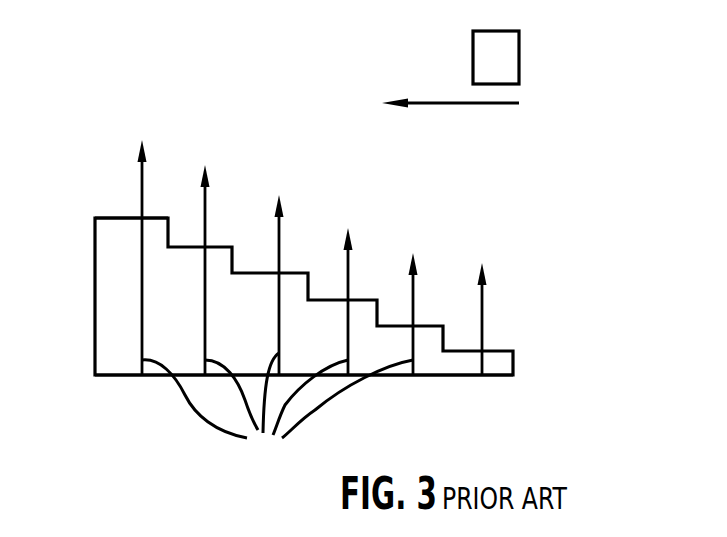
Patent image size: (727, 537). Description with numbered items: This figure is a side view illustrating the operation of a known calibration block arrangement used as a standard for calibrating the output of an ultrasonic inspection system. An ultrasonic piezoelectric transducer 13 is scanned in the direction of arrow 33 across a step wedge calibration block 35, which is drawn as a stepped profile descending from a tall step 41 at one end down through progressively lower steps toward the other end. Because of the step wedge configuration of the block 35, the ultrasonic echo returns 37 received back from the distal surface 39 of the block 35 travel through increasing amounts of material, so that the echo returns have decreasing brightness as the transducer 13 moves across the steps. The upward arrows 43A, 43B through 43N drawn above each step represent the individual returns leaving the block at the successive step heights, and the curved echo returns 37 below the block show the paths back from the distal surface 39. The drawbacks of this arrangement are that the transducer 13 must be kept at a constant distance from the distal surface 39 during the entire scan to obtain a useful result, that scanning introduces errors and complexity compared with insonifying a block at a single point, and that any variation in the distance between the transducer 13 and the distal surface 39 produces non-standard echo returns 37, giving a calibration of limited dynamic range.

The ultrasonic piezoelectric transducer 13 is at (510, 56).
The arrow 33 is at (493, 104).
The step wedge calibration block 35 is at (515, 358).
The ultrasonic echo returns 37 is at (277, 412).
The distal surface 39 is at (108, 375).
The top step 41 is at (115, 218).
The first beam 43A is at (503, 336).
The second beam 43B is at (430, 305).
The Nth beam 43N is at (158, 200).